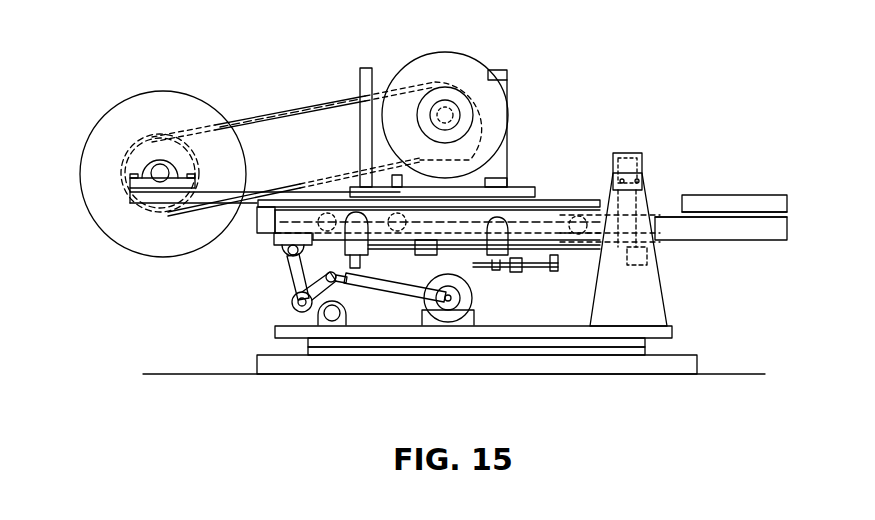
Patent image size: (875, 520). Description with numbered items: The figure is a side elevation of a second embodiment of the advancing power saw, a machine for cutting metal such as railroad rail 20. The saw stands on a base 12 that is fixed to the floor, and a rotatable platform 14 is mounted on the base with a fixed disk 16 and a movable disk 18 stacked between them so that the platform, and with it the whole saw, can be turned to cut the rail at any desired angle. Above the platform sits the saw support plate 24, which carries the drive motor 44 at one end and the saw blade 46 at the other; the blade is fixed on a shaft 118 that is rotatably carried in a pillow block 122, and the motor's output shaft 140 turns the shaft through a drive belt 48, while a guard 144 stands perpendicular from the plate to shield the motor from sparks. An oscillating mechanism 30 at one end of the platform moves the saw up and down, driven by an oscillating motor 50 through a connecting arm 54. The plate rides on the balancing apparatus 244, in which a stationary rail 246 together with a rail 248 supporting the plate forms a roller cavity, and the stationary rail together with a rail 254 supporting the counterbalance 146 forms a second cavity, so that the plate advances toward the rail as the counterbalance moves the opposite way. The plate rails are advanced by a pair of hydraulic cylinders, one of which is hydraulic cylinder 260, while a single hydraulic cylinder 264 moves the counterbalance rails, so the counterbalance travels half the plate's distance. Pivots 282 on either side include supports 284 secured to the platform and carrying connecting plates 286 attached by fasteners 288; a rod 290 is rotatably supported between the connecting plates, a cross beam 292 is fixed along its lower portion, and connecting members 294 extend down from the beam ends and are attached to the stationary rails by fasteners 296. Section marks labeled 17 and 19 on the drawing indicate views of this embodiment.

The base 12 is at (531, 375).
The rotatable platform 14 is at (674, 333).
The fixed disk 16 is at (646, 355).
The section line 17 is at (327, 222).
The movable disk 18 is at (646, 345).
The section line 19 is at (385, 200).
The railroad rail 20 is at (447, 207).
The saw support plate 24 is at (582, 200).
The oscillating mechanism 30 is at (297, 310).
The drive motor 44 is at (486, 60).
The saw blade 46 is at (141, 238).
The drive belt 48 is at (305, 107).
The oscillating motor 50 is at (464, 300).
The connecting arm 54 is at (450, 288).
The shaft 118 is at (158, 171).
The pillow block 122 is at (148, 188).
The output shaft 140 is at (448, 117).
The guard 144 is at (366, 68).
The counterbalance 146 is at (765, 198).
The balancing apparatus 244 is at (792, 224).
The stationary rail 246 is at (280, 247).
The rail 248 is at (258, 232).
The rail 254 is at (718, 233).
The hydraulic cylinder 260 is at (582, 255).
The hydraulic cylinder 264 is at (508, 278).
The pivot 282 is at (660, 207).
The support 284 is at (660, 299).
The connecting plate 286 is at (628, 152).
The fastener 288 is at (612, 153).
The rod 290 is at (648, 160).
The cross beam 292 is at (655, 185).
The connecting member 294 is at (657, 198).
The fastener 296 is at (658, 205).